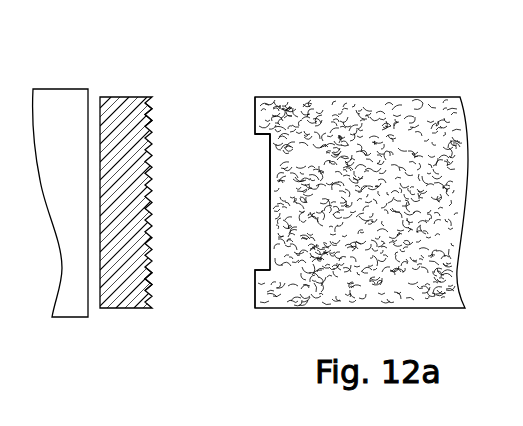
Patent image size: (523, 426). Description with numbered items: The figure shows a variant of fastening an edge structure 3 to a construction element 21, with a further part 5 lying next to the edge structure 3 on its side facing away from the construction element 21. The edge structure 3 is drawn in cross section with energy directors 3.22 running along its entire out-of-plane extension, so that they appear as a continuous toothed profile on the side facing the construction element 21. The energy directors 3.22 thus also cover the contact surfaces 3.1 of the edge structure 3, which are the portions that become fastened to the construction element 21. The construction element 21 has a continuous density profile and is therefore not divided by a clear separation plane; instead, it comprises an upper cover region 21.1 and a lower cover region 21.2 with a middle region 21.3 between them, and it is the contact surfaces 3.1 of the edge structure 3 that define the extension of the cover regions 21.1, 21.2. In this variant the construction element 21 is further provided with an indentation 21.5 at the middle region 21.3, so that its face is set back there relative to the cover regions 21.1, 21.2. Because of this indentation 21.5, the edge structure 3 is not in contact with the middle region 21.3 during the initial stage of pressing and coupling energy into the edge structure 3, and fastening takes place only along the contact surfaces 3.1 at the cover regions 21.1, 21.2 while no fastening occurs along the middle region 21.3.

The dental prosthesis / shaped part 5 is at (63, 120).
The edge structure 3 is at (123, 112).
The energy directors 3.22 is at (152, 129).
The contact surfaces 3.1 is at (153, 277).
The construction element 21 is at (413, 187).
The cover region 21.1 is at (253, 98).
The cover region 21.2 is at (253, 271).
The middle region 21.3 is at (253, 135).
The indentation 21.5 is at (268, 203).